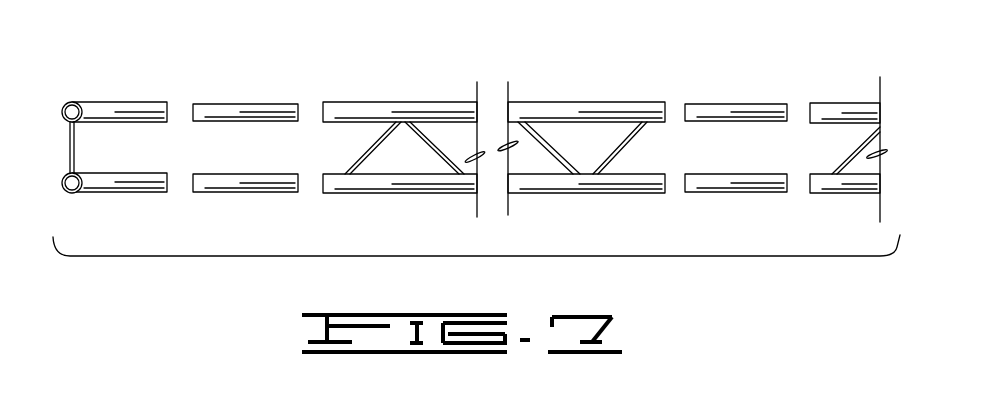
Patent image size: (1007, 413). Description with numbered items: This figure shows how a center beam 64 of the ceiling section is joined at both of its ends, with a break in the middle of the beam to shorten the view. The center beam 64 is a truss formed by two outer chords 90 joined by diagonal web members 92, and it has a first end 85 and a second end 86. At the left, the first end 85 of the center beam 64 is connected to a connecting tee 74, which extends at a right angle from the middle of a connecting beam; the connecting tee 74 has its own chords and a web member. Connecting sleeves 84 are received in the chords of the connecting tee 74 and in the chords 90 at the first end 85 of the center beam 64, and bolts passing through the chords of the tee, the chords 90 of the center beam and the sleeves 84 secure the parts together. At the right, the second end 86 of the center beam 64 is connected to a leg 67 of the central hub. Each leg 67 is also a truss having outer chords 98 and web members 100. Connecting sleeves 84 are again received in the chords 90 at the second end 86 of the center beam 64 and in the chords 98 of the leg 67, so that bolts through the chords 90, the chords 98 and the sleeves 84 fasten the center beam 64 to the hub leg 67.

The center beam 64 is at (586, 145).
The leg 67 is at (810, 131).
The connecting tee 74 is at (113, 102).
The connecting sleeve 84 is at (230, 104).
The first end 85 is at (323, 190).
The second end 86 is at (665, 192).
The outer chord 90 is at (359, 144).
The web member 92 is at (442, 148).
The outer chord 98 is at (857, 102).
The web member 100 is at (861, 135).